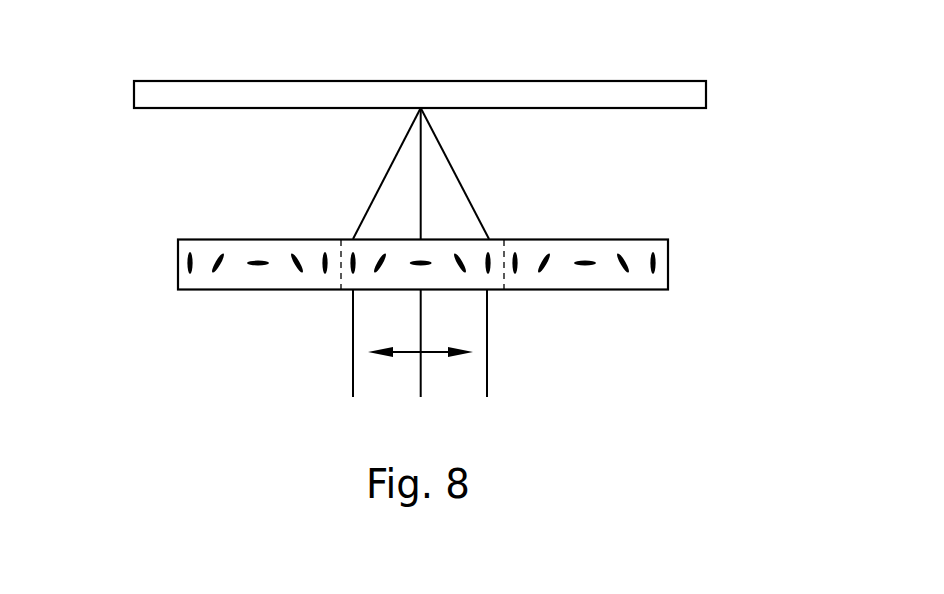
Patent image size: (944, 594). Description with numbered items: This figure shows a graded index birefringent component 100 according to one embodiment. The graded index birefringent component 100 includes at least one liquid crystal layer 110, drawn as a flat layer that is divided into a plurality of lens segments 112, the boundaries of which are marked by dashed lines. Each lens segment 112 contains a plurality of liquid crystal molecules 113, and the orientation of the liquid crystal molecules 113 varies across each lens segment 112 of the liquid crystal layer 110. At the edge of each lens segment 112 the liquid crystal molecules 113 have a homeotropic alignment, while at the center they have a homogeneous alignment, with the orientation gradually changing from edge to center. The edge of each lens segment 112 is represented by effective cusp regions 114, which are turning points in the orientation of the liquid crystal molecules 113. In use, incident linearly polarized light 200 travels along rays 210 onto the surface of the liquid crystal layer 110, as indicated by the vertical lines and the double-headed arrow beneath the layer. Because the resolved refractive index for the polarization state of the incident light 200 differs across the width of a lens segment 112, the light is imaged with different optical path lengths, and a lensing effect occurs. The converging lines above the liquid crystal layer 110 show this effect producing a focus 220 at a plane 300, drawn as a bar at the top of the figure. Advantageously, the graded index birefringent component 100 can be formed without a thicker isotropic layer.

The graded index birefringent component 100 is at (88, 48).
The plane 300 is at (706, 93).
The focus 220 is at (427, 110).
The liquid crystal layer 110 is at (668, 263).
The liquid crystal molecules 113 is at (490, 257).
The effective cusp regions 114 is at (505, 277).
The rays 210 is at (352, 342).
The lens segments 112 is at (452, 290).
The incident linearly polarized light 200 is at (407, 355).